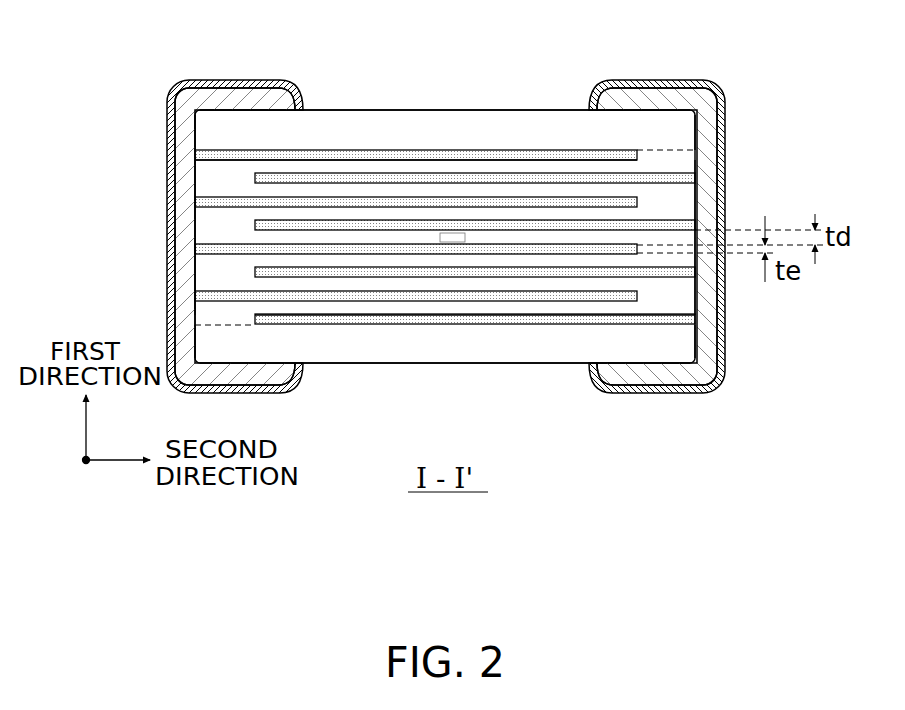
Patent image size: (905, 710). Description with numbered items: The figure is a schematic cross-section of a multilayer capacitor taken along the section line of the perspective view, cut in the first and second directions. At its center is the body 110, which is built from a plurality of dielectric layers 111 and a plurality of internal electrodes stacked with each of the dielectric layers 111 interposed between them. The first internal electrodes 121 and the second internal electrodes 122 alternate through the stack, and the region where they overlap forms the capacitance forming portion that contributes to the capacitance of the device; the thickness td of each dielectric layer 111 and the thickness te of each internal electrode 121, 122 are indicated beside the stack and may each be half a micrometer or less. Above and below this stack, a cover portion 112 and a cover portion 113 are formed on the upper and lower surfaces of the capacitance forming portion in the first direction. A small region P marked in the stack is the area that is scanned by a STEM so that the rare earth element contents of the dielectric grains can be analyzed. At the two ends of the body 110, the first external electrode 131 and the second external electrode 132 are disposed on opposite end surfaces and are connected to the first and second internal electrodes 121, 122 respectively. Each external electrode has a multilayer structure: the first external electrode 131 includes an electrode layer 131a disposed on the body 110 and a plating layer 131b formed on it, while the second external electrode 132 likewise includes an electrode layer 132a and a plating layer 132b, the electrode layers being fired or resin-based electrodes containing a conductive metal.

The body 110 is at (375, 110).
The dielectric layers 111 is at (322, 192).
The cover portion 112 is at (452, 128).
The cover portion 113 is at (357, 347).
The first internal electrode 121 is at (518, 130).
The second internal electrode 122 is at (577, 130).
The first external electrode 131 is at (155, 236).
The electrode layer 131a is at (184, 161).
The plating layer 131b is at (168, 192).
The second external electrode 132 is at (739, 236).
The electrode layer 132a is at (707, 140).
The plating layer 132b is at (720, 168).
The region P is at (452, 243).